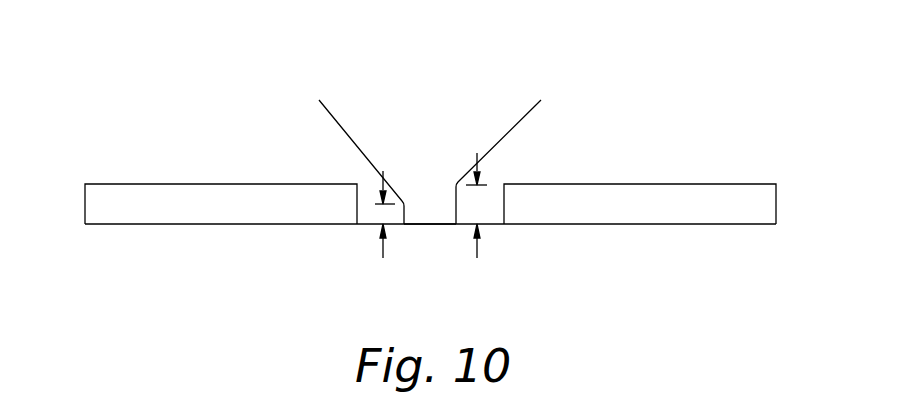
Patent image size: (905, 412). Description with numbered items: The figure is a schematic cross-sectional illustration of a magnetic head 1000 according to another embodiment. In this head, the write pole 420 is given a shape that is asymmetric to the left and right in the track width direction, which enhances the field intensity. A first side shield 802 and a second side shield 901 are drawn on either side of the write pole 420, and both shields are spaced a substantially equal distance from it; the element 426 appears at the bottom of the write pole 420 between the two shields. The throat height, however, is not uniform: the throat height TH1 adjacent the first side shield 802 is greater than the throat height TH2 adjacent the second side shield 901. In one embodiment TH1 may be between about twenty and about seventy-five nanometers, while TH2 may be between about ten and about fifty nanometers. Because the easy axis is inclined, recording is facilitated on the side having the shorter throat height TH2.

The magnetic head 1000 is at (173, 131).
The second side shield 901 is at (95, 201).
The first side shield 802 is at (766, 202).
The write pole 420 is at (452, 158).
The gap 426 is at (430, 224).
The throat height TH1 is at (475, 219).
The throat height TH2 is at (375, 228).